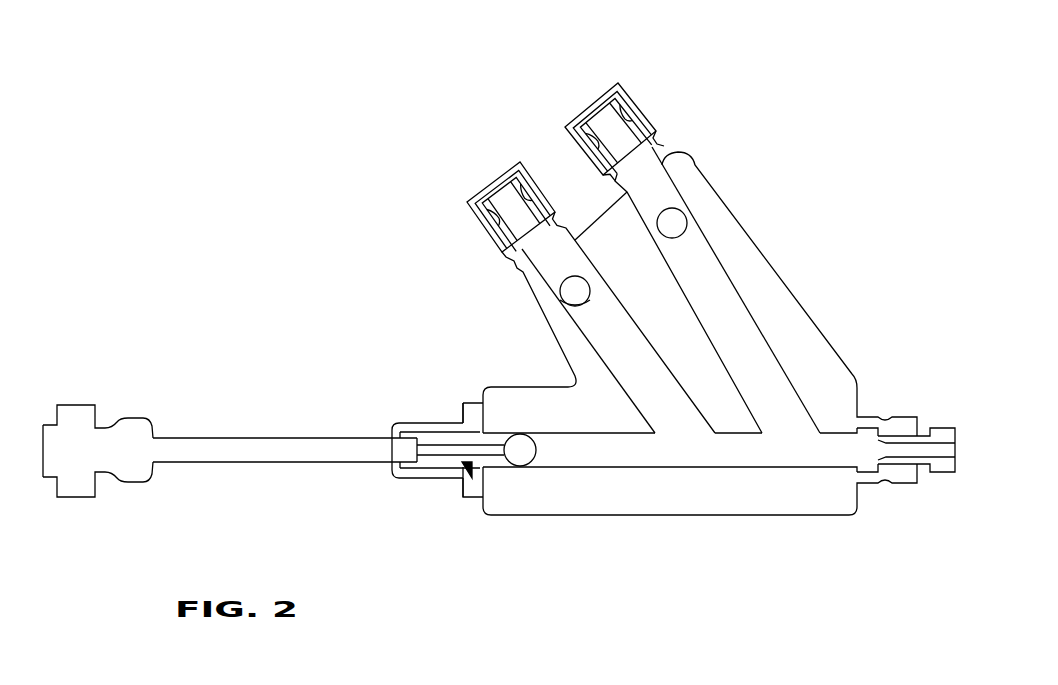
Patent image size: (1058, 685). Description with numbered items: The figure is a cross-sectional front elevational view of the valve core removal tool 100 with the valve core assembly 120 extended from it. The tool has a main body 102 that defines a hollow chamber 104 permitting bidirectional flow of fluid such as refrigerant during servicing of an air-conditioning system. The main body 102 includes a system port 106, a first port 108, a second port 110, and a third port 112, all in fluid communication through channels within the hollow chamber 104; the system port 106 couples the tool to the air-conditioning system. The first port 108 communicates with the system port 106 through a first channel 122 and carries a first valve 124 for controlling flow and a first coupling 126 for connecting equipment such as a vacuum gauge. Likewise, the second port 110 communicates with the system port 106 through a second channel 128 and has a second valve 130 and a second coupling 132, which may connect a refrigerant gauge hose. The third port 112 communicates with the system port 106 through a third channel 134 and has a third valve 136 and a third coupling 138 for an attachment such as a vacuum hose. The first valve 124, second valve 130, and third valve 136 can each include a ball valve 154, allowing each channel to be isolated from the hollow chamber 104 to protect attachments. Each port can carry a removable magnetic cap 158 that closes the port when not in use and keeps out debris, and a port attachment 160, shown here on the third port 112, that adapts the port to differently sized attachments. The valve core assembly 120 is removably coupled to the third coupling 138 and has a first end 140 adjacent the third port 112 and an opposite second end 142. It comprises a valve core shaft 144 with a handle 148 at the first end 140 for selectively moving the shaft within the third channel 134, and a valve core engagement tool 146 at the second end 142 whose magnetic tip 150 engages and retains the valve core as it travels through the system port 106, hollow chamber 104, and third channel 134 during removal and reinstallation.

The valve core removal tool 100 is at (860, 299).
The main body 102 is at (830, 338).
The hollow chamber 104 is at (738, 468).
The system port 106 is at (911, 487).
The first port 108 is at (664, 122).
The second port 110 is at (470, 234).
The third port 112 is at (480, 498).
The valve core assembly 120 is at (450, 490).
The first channel 122 is at (698, 258).
The first valve 124 is at (703, 206).
The first coupling 126 is at (600, 98).
The second channel 128 is at (575, 318).
The second valve 130 is at (560, 287).
The second coupling 132 is at (500, 196).
The third channel 134 is at (556, 470).
The third valve 136 is at (526, 436).
The third coupling 138 is at (483, 410).
The first end 140 is at (193, 474).
The second end 142 is at (464, 482).
The valve core shaft 144 is at (216, 437).
The valve core engagement tool 146 is at (446, 442).
The handle 148 is at (76, 405).
The magnetic tip 150 is at (470, 430).
The ball valve 154 is at (690, 224).
The removable magnetic cap 158 is at (518, 172).
The port attachment 160 is at (454, 418).